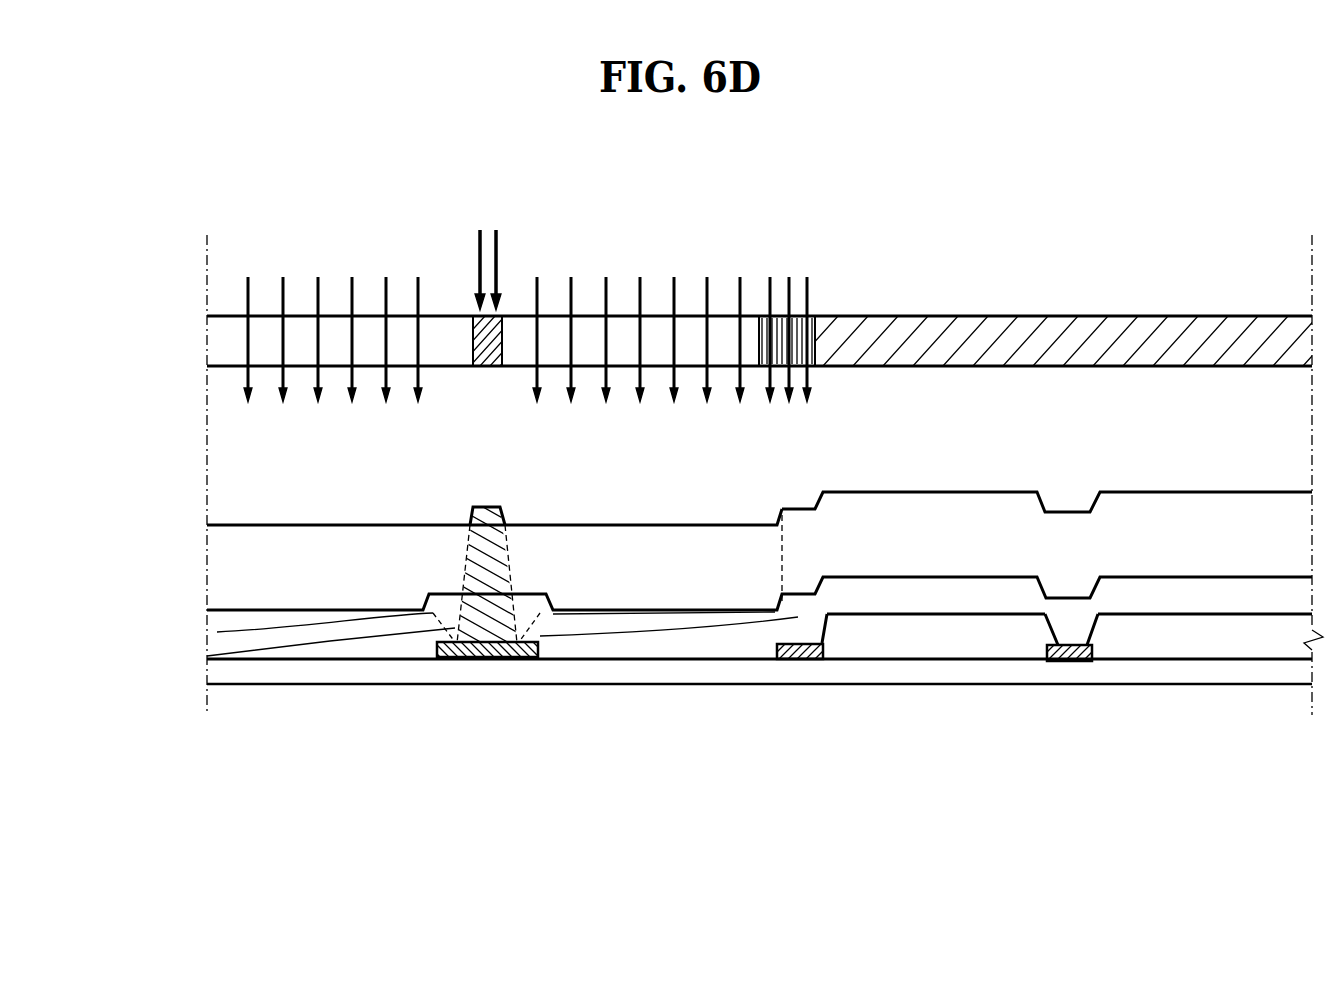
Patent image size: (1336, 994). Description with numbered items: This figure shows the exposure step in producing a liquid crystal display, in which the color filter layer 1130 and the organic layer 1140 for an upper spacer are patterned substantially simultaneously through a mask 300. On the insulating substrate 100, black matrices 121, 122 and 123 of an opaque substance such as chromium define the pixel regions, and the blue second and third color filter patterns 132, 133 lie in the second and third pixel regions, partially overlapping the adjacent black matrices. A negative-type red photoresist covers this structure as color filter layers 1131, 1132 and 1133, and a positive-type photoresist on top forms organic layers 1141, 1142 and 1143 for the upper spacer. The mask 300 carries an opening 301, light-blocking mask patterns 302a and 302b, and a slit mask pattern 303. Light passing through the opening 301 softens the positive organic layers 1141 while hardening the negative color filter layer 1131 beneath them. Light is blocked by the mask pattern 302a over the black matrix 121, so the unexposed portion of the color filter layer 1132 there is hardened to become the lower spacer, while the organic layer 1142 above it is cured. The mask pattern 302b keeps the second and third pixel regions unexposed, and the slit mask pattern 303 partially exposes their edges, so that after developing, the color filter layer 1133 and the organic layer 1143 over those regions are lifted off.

The insulating substrate 100 is at (348, 663).
The black matrix 121 is at (483, 658).
The black matrix 122 is at (793, 660).
The black matrix 123 is at (1068, 661).
The second color filter pattern 132 is at (956, 638).
The third color filter pattern 133 is at (1178, 638).
The insulating layer stack 1130 is at (83, 585).
The color filter layer 1131 is at (233, 622).
The color filter layer 1132 is at (217, 632).
The color filter layer 1133 is at (207, 656).
The conductive layer 1140 is at (575, 437).
The organic layer for forming an upper spacer 1141 is at (400, 525).
The organic layer for forming an upper spacer 1142 is at (480, 505).
The organic layer for forming an upper spacer 1143 is at (805, 548).
The mask 300 is at (198, 350).
The opening 301 is at (303, 325).
The mask pattern 302a is at (522, 335).
The mask pattern 302b is at (988, 332).
The slit mask pattern 303 is at (783, 332).